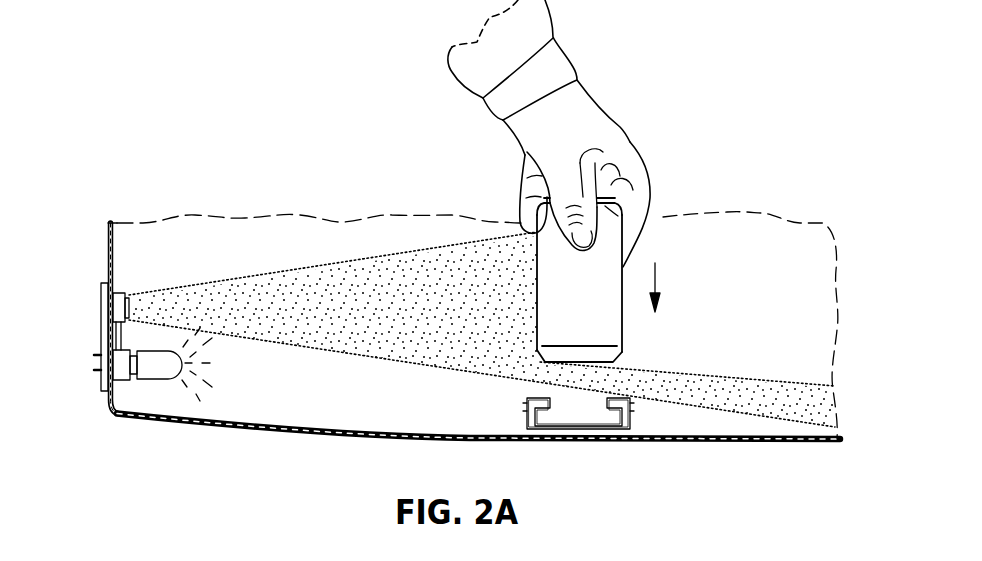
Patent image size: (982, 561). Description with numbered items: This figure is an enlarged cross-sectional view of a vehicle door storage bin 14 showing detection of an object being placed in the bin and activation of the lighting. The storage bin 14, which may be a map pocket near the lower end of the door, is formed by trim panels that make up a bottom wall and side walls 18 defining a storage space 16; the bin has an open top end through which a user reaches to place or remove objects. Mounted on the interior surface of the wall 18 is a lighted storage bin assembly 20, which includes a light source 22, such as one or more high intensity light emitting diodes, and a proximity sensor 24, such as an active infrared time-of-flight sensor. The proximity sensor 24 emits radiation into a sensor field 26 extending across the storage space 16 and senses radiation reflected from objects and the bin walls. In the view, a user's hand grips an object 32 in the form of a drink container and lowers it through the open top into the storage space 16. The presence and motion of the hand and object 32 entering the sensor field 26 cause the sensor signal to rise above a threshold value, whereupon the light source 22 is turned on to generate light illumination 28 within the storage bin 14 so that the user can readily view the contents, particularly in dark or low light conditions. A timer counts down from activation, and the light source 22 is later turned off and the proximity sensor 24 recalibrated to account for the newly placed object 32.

The storage bin 14 is at (294, 436).
The storage space 16 is at (340, 388).
The side wall 18 is at (108, 250).
The lighted storage bin assembly 20 is at (118, 360).
The light source 22 is at (157, 370).
The proximity sensor 24 is at (122, 290).
The sensor field 26 is at (262, 272).
The light illumination 28 is at (205, 380).
The object 32 is at (655, 245).